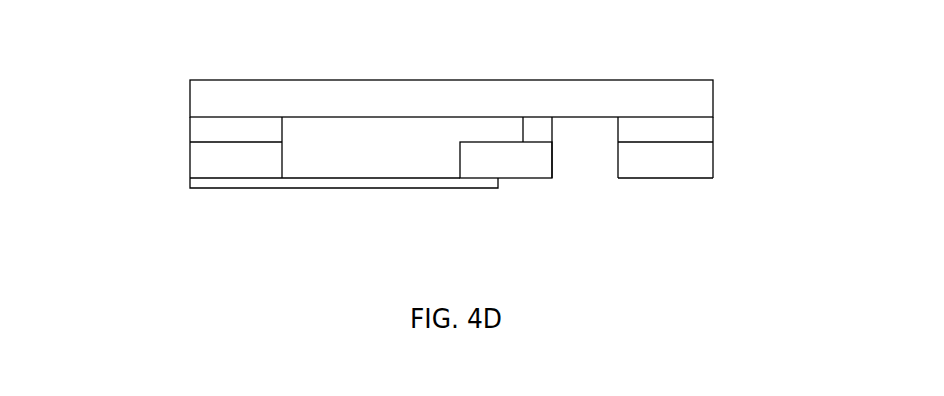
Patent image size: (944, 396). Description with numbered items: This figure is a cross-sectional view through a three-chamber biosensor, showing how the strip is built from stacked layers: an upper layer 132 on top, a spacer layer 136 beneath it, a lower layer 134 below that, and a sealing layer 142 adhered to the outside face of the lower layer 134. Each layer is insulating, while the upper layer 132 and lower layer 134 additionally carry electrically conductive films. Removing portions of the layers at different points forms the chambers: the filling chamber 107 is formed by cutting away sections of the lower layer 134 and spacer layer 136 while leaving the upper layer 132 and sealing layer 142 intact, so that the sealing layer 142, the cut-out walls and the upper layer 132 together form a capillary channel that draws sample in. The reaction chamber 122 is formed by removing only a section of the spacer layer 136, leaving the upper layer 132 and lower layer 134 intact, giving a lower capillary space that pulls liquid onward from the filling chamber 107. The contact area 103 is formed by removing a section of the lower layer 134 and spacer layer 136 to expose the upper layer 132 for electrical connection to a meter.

The electrical contact area 103 is at (580, 142).
The filling chamber 107 is at (375, 152).
The reaction chamber 122 is at (505, 135).
The upper layer 132 is at (207, 92).
The lower layer 134 is at (520, 170).
The spacer layer 136 is at (208, 127).
The sealing layer 142 is at (208, 183).